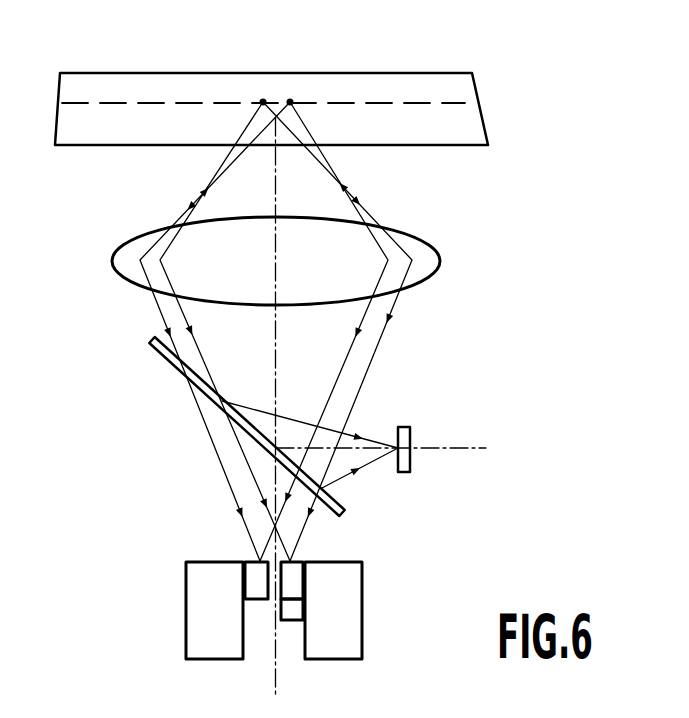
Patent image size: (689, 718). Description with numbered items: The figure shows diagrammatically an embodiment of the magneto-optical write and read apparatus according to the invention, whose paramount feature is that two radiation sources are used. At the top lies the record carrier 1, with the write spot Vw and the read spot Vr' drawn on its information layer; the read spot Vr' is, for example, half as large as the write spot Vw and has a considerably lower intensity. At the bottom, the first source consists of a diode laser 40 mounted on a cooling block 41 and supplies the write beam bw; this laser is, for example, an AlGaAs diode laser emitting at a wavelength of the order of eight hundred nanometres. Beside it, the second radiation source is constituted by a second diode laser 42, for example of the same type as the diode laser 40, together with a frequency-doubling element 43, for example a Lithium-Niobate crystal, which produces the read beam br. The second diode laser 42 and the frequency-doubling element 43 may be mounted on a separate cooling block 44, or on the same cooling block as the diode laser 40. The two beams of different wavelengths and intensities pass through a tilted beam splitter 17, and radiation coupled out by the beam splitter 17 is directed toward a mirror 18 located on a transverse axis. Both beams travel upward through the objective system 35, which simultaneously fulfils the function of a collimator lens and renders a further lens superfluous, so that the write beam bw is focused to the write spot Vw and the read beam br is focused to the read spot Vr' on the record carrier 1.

The record carrier 1 is at (413, 61).
The objective system 35 is at (441, 262).
The beam splitter 17 is at (171, 361).
The mirror 18 is at (410, 465).
The diode laser 40 is at (255, 561).
The cooling block 41 is at (196, 640).
The second diode laser 42 is at (293, 622).
The frequency-doubling element 43 is at (298, 561).
The separate cooling block 44 is at (348, 625).
The write spot Vw is at (290, 99).
The read spot Vr' is at (250, 61).
The write beam bw is at (293, 483).
The read beam br is at (283, 546).